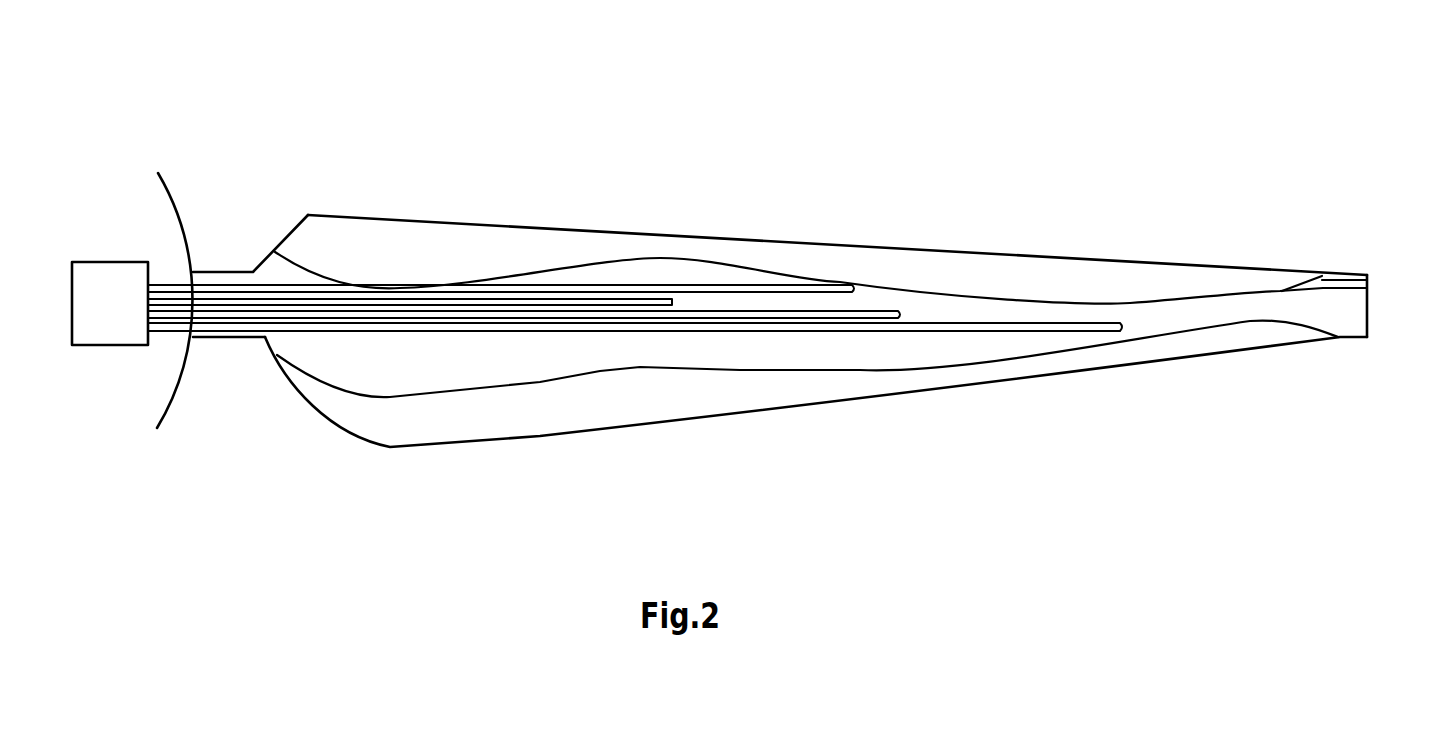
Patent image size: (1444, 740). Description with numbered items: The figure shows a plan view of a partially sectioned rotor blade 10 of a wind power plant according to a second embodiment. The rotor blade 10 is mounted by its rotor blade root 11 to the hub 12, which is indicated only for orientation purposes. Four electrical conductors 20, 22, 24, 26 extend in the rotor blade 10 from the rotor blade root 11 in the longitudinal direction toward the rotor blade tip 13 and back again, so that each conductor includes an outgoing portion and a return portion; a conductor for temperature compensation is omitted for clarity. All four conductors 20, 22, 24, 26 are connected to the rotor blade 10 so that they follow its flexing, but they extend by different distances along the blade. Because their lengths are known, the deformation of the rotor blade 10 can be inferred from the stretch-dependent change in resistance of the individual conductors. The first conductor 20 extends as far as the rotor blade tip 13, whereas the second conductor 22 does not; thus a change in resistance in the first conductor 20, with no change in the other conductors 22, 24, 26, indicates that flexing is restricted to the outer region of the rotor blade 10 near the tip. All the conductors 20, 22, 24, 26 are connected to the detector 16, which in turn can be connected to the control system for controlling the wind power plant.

The rotor blade 10 is at (448, 212).
The rotor blade root 11 is at (231, 272).
The hub 12 is at (173, 190).
The rotor blade tip 13 is at (1367, 308).
The detector 16 is at (122, 318).
The first conductor 20 is at (722, 285).
The second conductor 22 is at (590, 332).
The electrical conductor 24 is at (847, 317).
The electrical conductor 26 is at (605, 300).